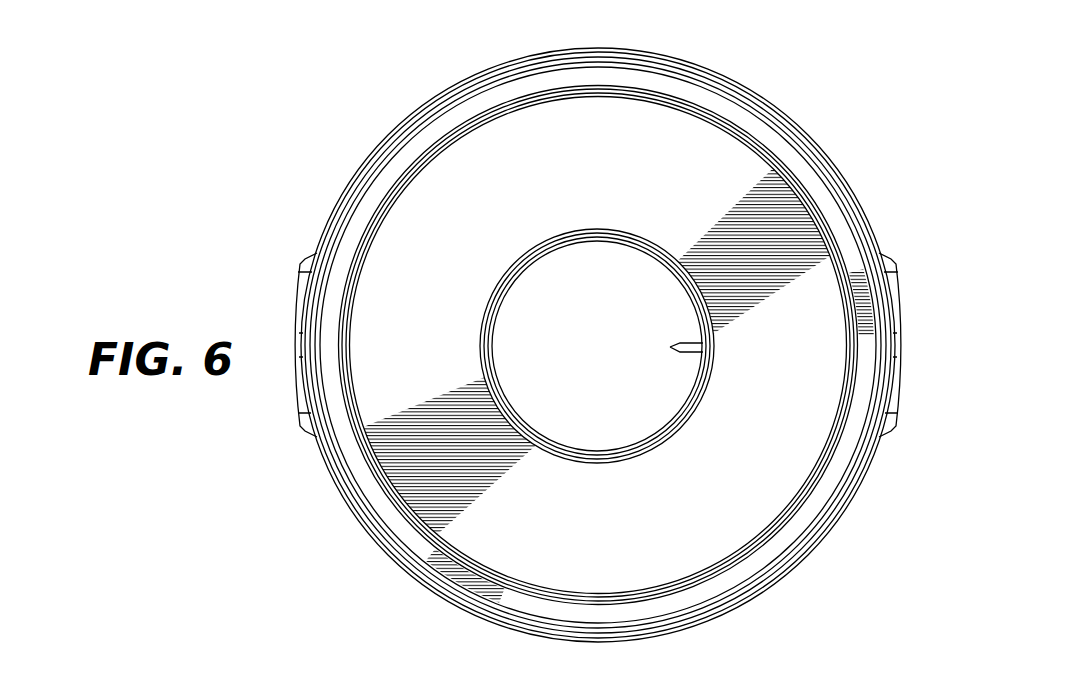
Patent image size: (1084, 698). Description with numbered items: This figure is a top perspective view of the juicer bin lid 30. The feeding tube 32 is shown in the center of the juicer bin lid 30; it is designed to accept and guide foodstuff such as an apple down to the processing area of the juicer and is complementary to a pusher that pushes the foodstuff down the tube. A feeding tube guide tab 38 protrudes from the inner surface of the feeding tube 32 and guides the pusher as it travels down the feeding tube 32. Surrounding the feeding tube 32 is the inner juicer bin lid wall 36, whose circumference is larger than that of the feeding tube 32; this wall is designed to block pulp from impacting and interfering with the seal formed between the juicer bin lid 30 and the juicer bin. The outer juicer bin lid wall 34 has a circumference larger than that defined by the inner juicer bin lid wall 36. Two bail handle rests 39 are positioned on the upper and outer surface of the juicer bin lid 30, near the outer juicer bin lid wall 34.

The juicer bin lid 30 is at (348, 140).
The feeding tube 32 is at (650, 237).
The outer juicer bin lid wall 34 is at (327, 218).
The inner juicer bin lid wall 36 is at (835, 232).
The feeding tube guide tab 38 is at (697, 355).
The bail handle rest 39 is at (302, 422).